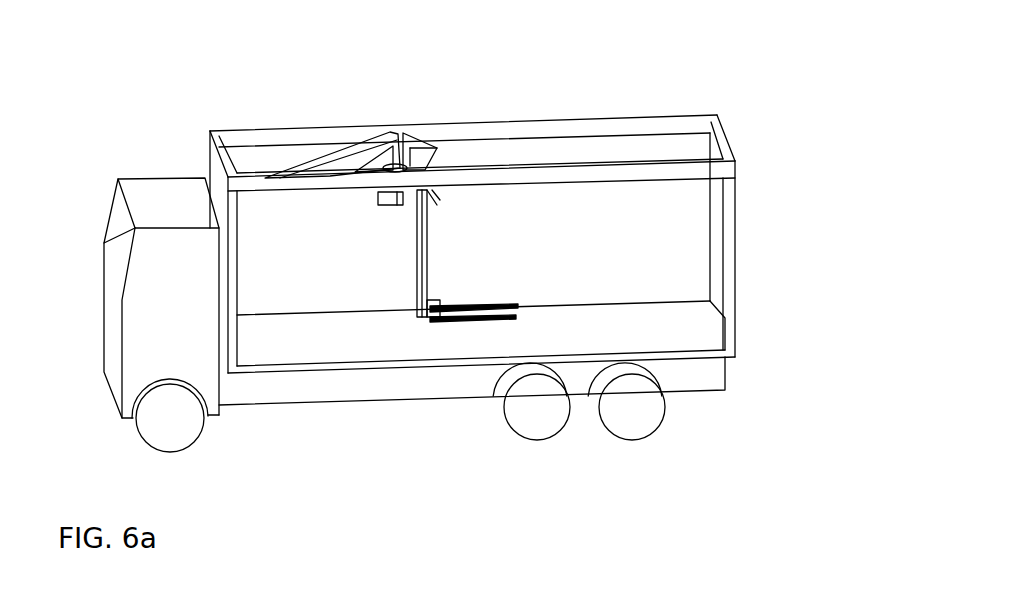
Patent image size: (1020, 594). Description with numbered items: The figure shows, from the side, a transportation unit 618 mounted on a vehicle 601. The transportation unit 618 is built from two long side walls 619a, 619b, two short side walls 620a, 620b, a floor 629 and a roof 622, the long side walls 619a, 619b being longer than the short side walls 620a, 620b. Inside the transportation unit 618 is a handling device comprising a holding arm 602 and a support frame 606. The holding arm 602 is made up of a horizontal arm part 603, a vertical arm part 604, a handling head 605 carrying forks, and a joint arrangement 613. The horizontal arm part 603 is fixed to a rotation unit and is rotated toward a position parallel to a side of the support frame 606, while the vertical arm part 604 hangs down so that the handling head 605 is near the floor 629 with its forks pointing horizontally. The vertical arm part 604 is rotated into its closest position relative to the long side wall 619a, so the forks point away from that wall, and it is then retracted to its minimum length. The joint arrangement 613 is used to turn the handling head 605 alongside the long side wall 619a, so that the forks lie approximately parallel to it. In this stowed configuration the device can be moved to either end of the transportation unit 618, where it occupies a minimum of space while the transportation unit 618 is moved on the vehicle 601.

The vehicle 601 is at (152, 195).
The holding arm 602 is at (439, 238).
The horizontal arm part 603 is at (420, 156).
The vertical arm part 604 is at (415, 280).
The handling head 605 is at (455, 322).
The support frame 606 is at (330, 150).
The joint arrangement 613 is at (423, 317).
The transportation unit 618 is at (575, 112).
The long side wall 619a is at (538, 118).
The long side wall 619b is at (588, 178).
The short side wall 620a is at (212, 134).
The short side wall 620b is at (722, 143).
The roof 622 is at (622, 144).
The floor 629 is at (315, 342).